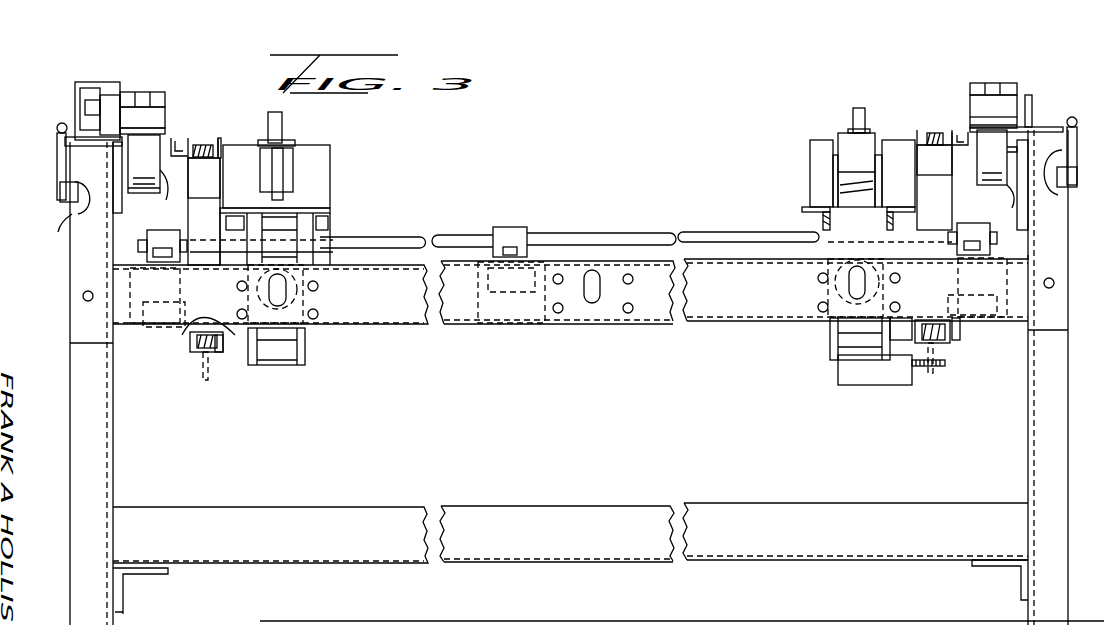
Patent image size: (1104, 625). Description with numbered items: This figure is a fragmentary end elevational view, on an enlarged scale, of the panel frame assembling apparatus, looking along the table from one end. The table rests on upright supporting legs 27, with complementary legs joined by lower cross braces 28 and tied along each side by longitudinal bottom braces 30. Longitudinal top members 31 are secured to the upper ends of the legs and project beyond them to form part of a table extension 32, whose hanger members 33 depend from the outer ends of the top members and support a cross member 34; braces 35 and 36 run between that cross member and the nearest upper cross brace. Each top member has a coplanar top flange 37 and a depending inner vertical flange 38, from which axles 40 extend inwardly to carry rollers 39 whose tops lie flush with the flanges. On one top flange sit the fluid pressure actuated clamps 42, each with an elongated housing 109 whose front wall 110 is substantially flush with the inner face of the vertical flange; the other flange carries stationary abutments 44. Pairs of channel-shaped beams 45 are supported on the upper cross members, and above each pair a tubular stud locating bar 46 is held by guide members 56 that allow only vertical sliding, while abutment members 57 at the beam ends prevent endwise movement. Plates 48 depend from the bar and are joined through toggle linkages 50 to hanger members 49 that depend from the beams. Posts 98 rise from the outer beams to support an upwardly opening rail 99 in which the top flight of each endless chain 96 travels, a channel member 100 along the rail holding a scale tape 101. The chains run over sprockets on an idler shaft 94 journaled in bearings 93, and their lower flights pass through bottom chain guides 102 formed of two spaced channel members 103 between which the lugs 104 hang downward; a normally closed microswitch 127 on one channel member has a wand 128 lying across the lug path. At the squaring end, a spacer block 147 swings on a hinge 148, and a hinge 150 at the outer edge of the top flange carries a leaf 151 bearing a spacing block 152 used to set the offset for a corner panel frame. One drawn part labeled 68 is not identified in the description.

The upright supporting legs 27 is at (95, 485).
The lower cross braces 28 is at (584, 502).
The longitudinal bottom braces 30 is at (122, 598).
The longitudinal top members 31 is at (110, 200).
The table extension 32 is at (557, 319).
The hanger members 33 is at (72, 290).
The cross member 34 is at (723, 318).
The braces 35 is at (150, 325).
The brace 36 is at (530, 284).
The top flanges 37 is at (83, 146).
The inner vertical flanges 38 is at (591, 201).
The rollers 39 is at (168, 185).
The axles 40 is at (70, 212).
The fluid pressure actuated clamps 42 is at (78, 82).
The stationary abutments 44 is at (1030, 95).
The beams 45 is at (229, 263).
The stud locating bar 46 is at (862, 166).
The plates 48 is at (840, 194).
The hanger members 49 is at (308, 346).
The toggle linkages 50 is at (300, 241).
The guide members 56 is at (812, 165).
The abutment members 57 is at (315, 178).
The pin 68 is at (283, 125).
The bearings 93 is at (520, 233).
The idler shaft 94 is at (620, 235).
The endless chains 96 is at (201, 142).
The posts 98 is at (208, 205).
The rail 99 is at (218, 140).
The channel member 100 is at (955, 92).
The tape 101 is at (178, 136).
The bottom chain guides 102 is at (222, 352).
The channel members 103 is at (190, 330).
The lugs 104 is at (195, 372).
The elongated housing 109 is at (77, 107).
The front wall 110 is at (125, 90).
The microswitch 127 is at (866, 385).
The wand 128 is at (947, 364).
The spacer block 147 is at (155, 118).
The hinge 148 is at (153, 100).
The hinge 150 is at (58, 128).
The leaf 151 is at (62, 190).
The spacing block 152 is at (77, 192).